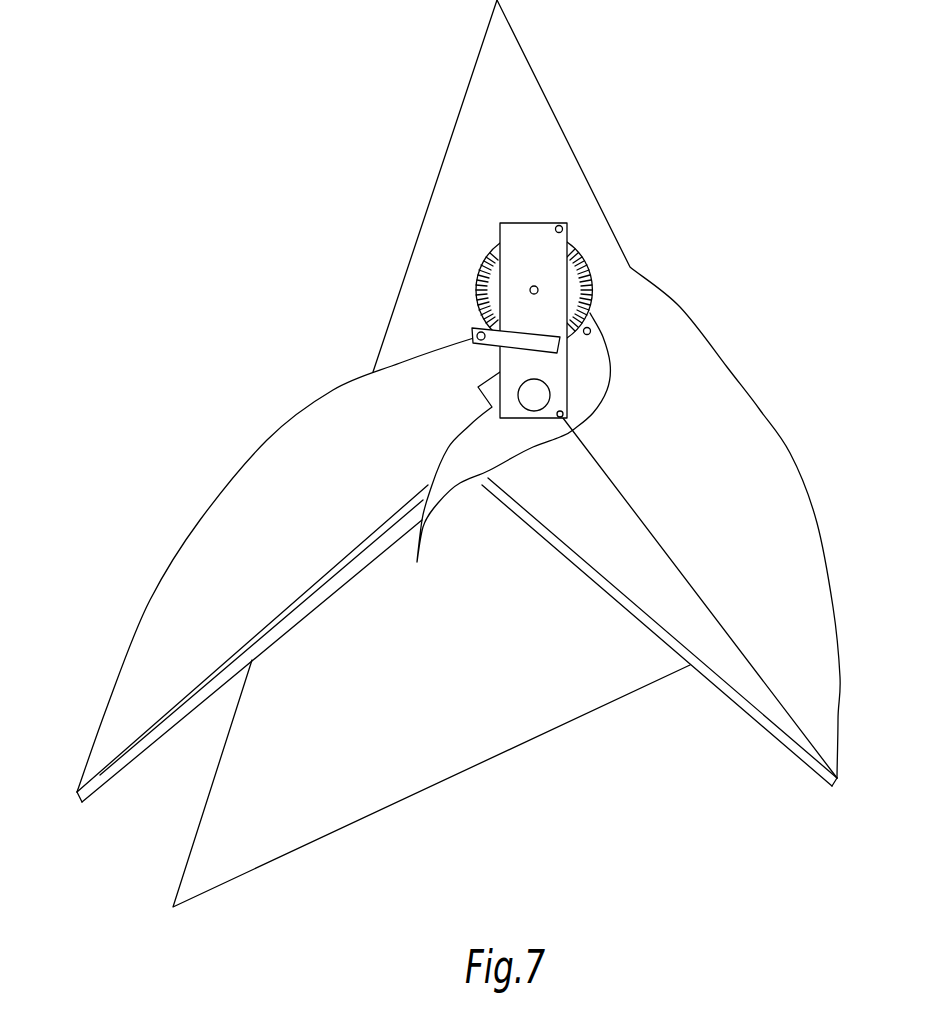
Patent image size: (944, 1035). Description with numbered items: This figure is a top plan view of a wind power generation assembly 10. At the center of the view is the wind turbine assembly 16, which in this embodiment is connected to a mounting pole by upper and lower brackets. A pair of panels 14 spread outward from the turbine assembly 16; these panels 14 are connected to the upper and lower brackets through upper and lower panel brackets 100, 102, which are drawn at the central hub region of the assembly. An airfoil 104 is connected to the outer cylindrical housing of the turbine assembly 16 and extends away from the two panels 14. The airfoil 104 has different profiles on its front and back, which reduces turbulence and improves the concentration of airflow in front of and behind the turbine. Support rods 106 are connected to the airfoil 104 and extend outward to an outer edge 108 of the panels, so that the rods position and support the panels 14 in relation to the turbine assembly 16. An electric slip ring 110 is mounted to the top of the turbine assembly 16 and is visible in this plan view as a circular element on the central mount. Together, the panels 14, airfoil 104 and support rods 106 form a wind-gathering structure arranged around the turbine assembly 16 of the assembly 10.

The assembly 10 is at (205, 336).
The panels 14 is at (462, 108).
The wind turbine assembly 16 is at (588, 277).
The upper panel bracket 100 is at (472, 328).
The lower panel bracket 102 is at (566, 228).
The airfoil 104 is at (455, 450).
The support rods 106 is at (328, 597).
The outer edge 108 is at (75, 803).
The electric slip ring 110 is at (547, 387).